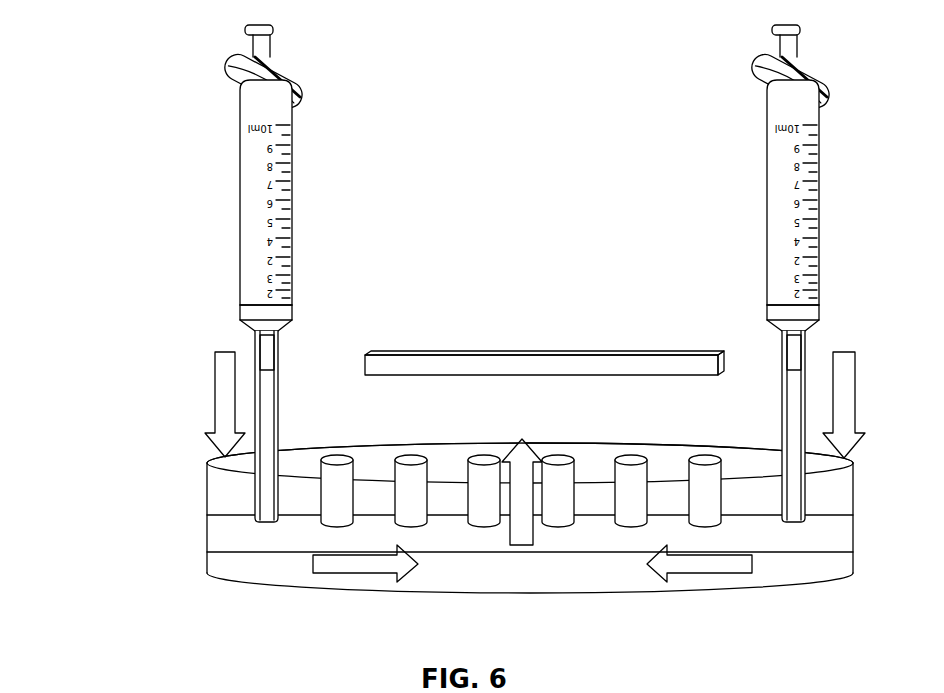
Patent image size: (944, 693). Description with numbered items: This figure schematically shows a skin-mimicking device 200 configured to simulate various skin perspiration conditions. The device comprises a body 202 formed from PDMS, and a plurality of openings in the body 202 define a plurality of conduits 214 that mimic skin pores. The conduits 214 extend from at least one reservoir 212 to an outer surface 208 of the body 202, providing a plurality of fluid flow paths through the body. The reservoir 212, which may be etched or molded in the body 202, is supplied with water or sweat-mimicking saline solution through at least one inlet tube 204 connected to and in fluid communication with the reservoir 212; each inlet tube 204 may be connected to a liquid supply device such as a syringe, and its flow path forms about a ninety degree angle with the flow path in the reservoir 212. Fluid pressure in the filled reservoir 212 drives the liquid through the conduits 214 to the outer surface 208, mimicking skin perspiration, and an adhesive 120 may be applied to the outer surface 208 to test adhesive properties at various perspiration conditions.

The skin-mimicking device 200 is at (112, 46).
The adhesive 120 is at (628, 352).
The body 202 is at (207, 522).
The inlet tube 204 is at (272, 378).
The outer surface 208 is at (661, 457).
The reservoir 212 is at (252, 541).
The conduits 214 is at (322, 472).